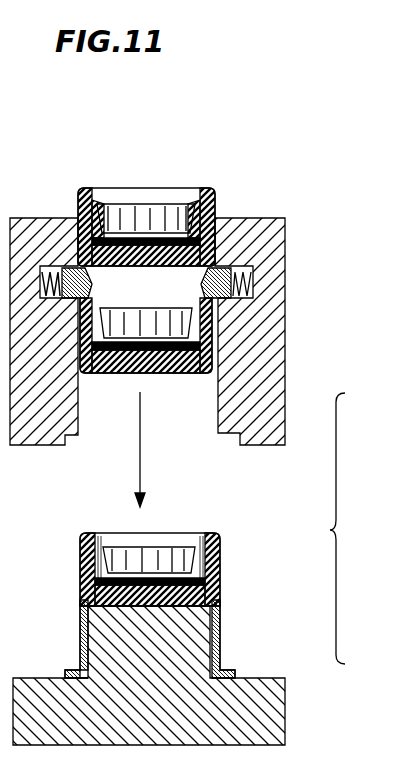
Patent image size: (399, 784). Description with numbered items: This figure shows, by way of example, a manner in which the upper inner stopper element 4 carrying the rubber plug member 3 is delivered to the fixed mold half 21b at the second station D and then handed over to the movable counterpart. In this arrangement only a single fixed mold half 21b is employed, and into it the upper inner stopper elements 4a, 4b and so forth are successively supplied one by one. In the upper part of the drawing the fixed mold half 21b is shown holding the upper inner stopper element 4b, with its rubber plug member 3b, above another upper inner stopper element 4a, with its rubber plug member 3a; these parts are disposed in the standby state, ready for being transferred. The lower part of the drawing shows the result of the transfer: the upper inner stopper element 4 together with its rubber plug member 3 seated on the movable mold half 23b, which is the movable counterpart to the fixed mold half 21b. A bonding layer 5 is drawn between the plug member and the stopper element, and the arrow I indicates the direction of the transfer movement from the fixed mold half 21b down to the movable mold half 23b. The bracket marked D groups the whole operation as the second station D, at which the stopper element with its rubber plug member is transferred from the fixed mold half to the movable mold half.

The upper inner stopper element 4b is at (114, 186).
The rubber plug member 3b is at (214, 236).
The upper inner stopper element 4a is at (118, 375).
The rubber plug member 3a is at (172, 375).
The fixed mold half 21b is at (268, 398).
The second station D is at (364, 541).
The direction I is at (79, 566).
The upper inner stopper element 4 is at (221, 549).
The rubber plug member 3 is at (80, 599).
The bonding layer 5 is at (214, 600).
The movable mold half 23b is at (206, 640).